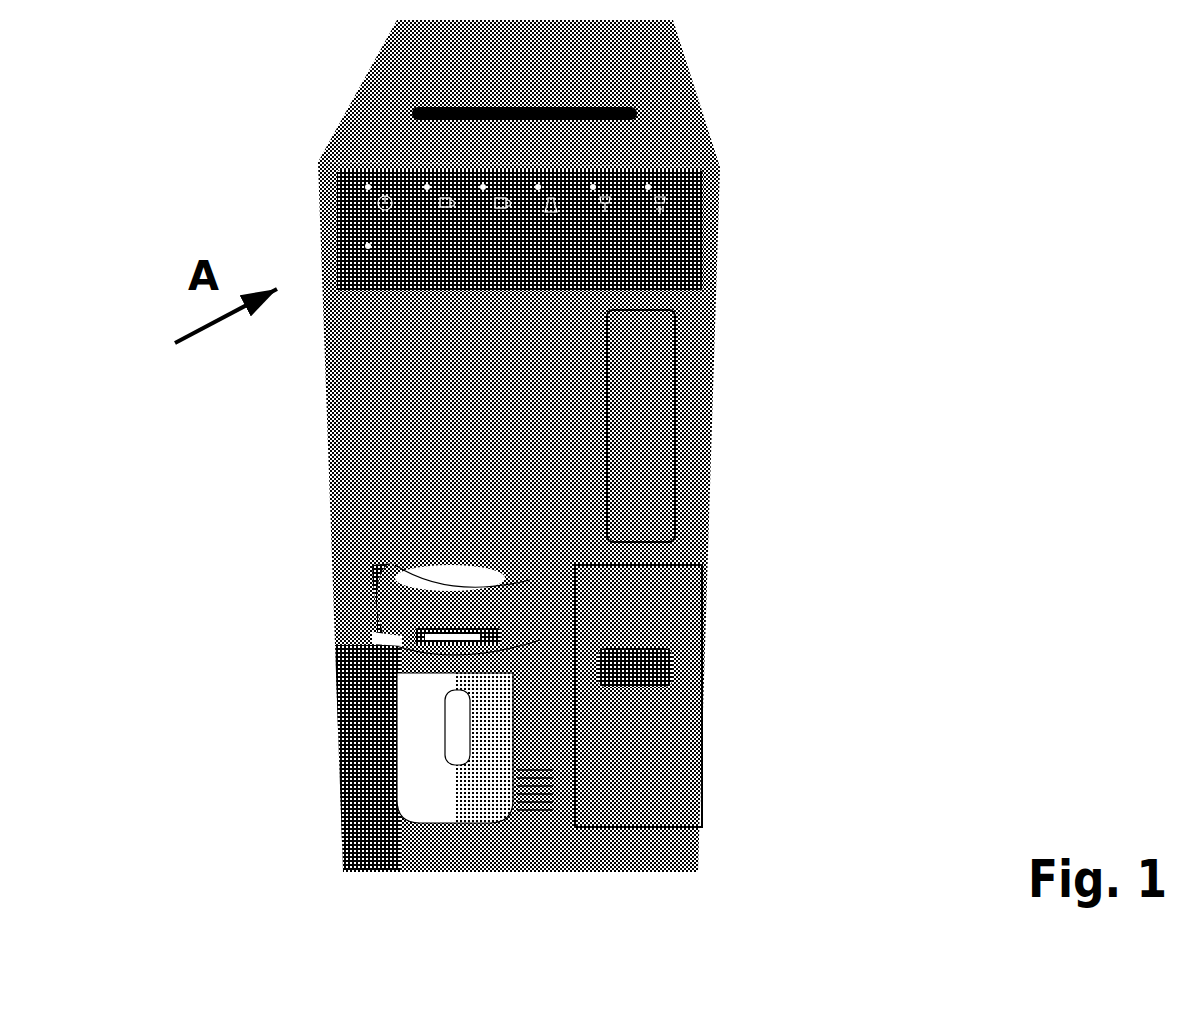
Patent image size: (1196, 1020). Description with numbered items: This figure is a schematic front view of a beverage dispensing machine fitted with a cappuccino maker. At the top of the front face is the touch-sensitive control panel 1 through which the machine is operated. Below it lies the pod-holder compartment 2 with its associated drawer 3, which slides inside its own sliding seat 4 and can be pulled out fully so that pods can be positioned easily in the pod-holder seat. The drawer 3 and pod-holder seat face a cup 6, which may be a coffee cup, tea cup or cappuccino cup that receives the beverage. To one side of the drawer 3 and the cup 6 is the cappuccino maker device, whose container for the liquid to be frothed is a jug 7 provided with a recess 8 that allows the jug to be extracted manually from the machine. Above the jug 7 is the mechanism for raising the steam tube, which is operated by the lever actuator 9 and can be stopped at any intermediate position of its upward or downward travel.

The control panel 1 is at (653, 250).
The pod-holder compartment 2 is at (372, 577).
The drawer 3 is at (417, 643).
The sliding seat 4 is at (357, 637).
The cup 6 is at (413, 755).
The jug 7 is at (651, 790).
The recess 8 is at (655, 672).
The lever actuator 9 is at (650, 537).